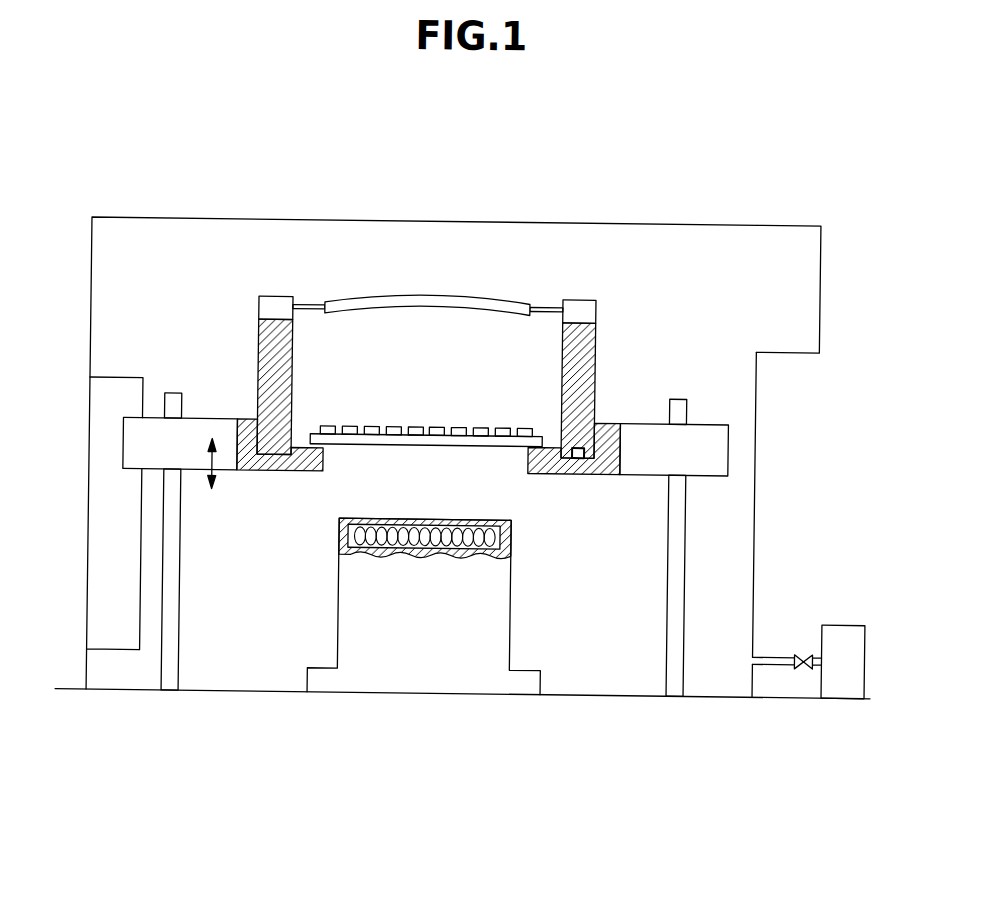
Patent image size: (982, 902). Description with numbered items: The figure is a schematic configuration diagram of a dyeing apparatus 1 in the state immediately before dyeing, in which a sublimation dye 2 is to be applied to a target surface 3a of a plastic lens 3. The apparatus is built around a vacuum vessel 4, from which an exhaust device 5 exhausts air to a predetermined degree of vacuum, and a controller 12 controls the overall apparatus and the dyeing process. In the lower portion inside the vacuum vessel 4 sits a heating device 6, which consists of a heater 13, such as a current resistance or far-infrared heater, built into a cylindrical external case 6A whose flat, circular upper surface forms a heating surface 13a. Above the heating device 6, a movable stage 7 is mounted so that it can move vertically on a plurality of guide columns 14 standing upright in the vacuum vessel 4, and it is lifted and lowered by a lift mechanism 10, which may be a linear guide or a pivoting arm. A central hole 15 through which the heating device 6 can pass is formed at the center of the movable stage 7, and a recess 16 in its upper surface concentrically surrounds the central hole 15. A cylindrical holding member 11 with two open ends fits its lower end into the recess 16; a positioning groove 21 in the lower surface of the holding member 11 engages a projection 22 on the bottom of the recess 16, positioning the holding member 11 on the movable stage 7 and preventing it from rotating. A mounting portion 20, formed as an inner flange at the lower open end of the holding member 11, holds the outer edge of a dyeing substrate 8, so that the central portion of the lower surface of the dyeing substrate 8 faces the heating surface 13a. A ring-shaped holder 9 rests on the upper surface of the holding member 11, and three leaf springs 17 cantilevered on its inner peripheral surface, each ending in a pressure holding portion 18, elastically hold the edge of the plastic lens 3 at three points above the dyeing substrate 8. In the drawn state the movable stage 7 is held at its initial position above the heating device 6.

The dyeing apparatus 1 is at (254, 184).
The sublimation dye 2 is at (463, 423).
The plastic lens 3 is at (419, 286).
The target surface 3a is at (379, 305).
The vacuum vessel 4 is at (762, 457).
The exhaust device 5 is at (845, 616).
The heating device 6 is at (518, 598).
The external case 6A is at (343, 582).
The movable stage 7 is at (650, 468).
The dyeing substrate 8 is at (394, 442).
The holder 9 is at (585, 293).
The lift mechanism 10 is at (124, 377).
The holding member 11 is at (599, 350).
The controller 12 is at (787, 344).
The heater 13 is at (343, 534).
The heating surface 13a is at (456, 515).
The guide columns 14 is at (178, 602).
The central hole 15 is at (524, 468).
The recess 16 is at (308, 446).
The leaf springs 17 is at (302, 302).
The pressure holding portion 18 is at (319, 303).
The mounting portion 20 is at (327, 452).
The positioning groove 21 is at (583, 452).
The projection 22 is at (589, 452).